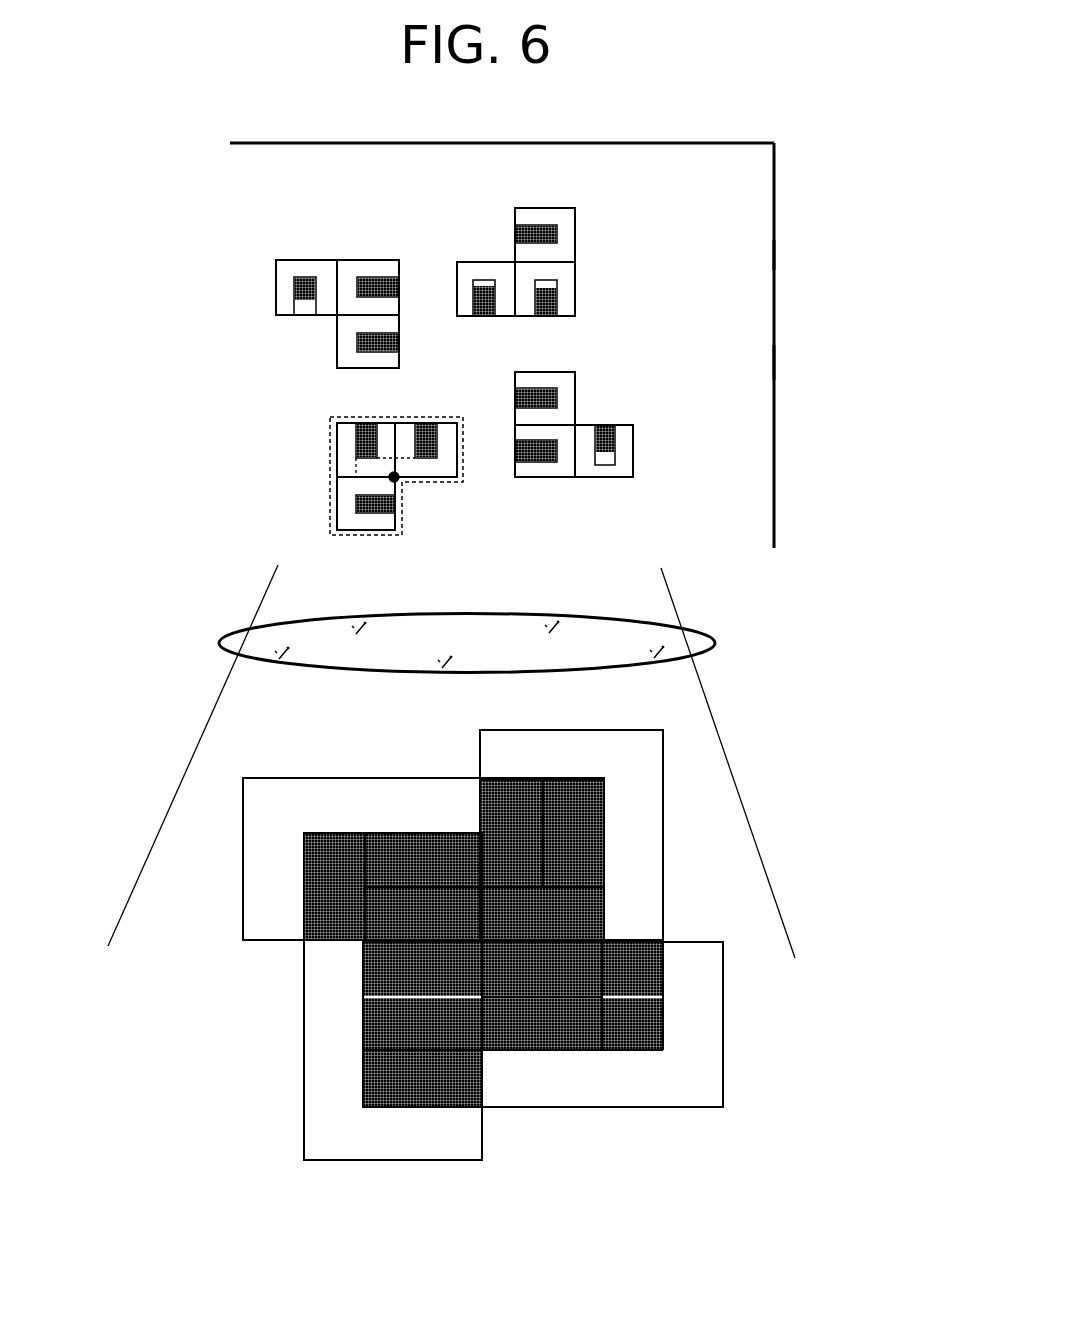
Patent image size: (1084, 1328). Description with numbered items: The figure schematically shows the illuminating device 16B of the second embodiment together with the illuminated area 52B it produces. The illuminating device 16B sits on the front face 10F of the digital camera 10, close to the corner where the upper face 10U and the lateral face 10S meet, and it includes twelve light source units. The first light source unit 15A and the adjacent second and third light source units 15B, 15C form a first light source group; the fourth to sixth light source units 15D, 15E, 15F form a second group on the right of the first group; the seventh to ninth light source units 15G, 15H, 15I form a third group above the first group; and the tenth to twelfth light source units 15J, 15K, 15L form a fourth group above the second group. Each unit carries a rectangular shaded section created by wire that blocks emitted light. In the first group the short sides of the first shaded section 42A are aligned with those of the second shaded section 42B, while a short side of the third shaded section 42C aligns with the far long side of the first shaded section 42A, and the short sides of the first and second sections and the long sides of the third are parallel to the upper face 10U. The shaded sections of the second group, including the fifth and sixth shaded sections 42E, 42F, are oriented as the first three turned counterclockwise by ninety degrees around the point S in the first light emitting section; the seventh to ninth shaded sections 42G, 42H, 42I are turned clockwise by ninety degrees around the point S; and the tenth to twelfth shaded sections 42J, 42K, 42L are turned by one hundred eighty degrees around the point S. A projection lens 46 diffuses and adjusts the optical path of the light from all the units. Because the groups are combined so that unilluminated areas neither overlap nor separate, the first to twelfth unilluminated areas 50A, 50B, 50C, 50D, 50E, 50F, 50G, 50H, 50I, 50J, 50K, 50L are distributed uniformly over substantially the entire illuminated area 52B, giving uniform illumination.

The digital camera 10 is at (800, 151).
The upper face 10U is at (632, 142).
The lateral face 10S is at (774, 306).
The front face 10F is at (757, 362).
The illuminating device 16B is at (755, 256).
The first light source unit 15A is at (336, 465).
The second light source unit 15B is at (456, 488).
The third light source unit 15C is at (336, 522).
The fourth light source unit 15D is at (553, 480).
The fifth light source unit 15E is at (578, 397).
The sixth light source unit 15F is at (636, 478).
The seventh light source unit 15G is at (347, 259).
The eighth light source unit 15H is at (336, 342).
The ninth light source unit 15I is at (276, 270).
The tenth light source unit 15J is at (577, 272).
The eleventh light source unit 15K is at (505, 320).
The twelfth light source unit 15L is at (577, 219).
The first shaded section 42A is at (356, 437).
The second shaded section 42B is at (437, 447).
The third shaded section 42C is at (377, 514).
The fifth shaded section 42E is at (537, 393).
The sixth shaded section 42F is at (617, 438).
The seventh shaded section 42G is at (382, 278).
The eighth shaded section 42H is at (374, 351).
The ninth shaded section 42I is at (295, 303).
The tenth shaded section 42J is at (557, 302).
The eleventh shaded section 42K is at (473, 306).
The twelfth shaded section 42L is at (538, 225).
The point S is at (394, 477).
The projection lens 46 is at (716, 644).
The illuminated area 52B is at (693, 737).
The first unilluminated area 50A is at (385, 1007).
The second unilluminated area 50B is at (453, 1047).
The third unilluminated area 50C is at (373, 1090).
The fourth unilluminated area 50D is at (567, 1050).
The fifth unilluminated area 50E is at (597, 987).
The sixth unilluminated area 50F is at (637, 1052).
The seventh unilluminated area 50G is at (407, 843).
The eighth unilluminated area 50H is at (397, 918).
The ninth unilluminated area 50I is at (336, 843).
The tenth unilluminated area 50J is at (588, 892).
The eleventh unilluminated area 50K is at (497, 855).
The twelfth unilluminated area 50L is at (572, 806).